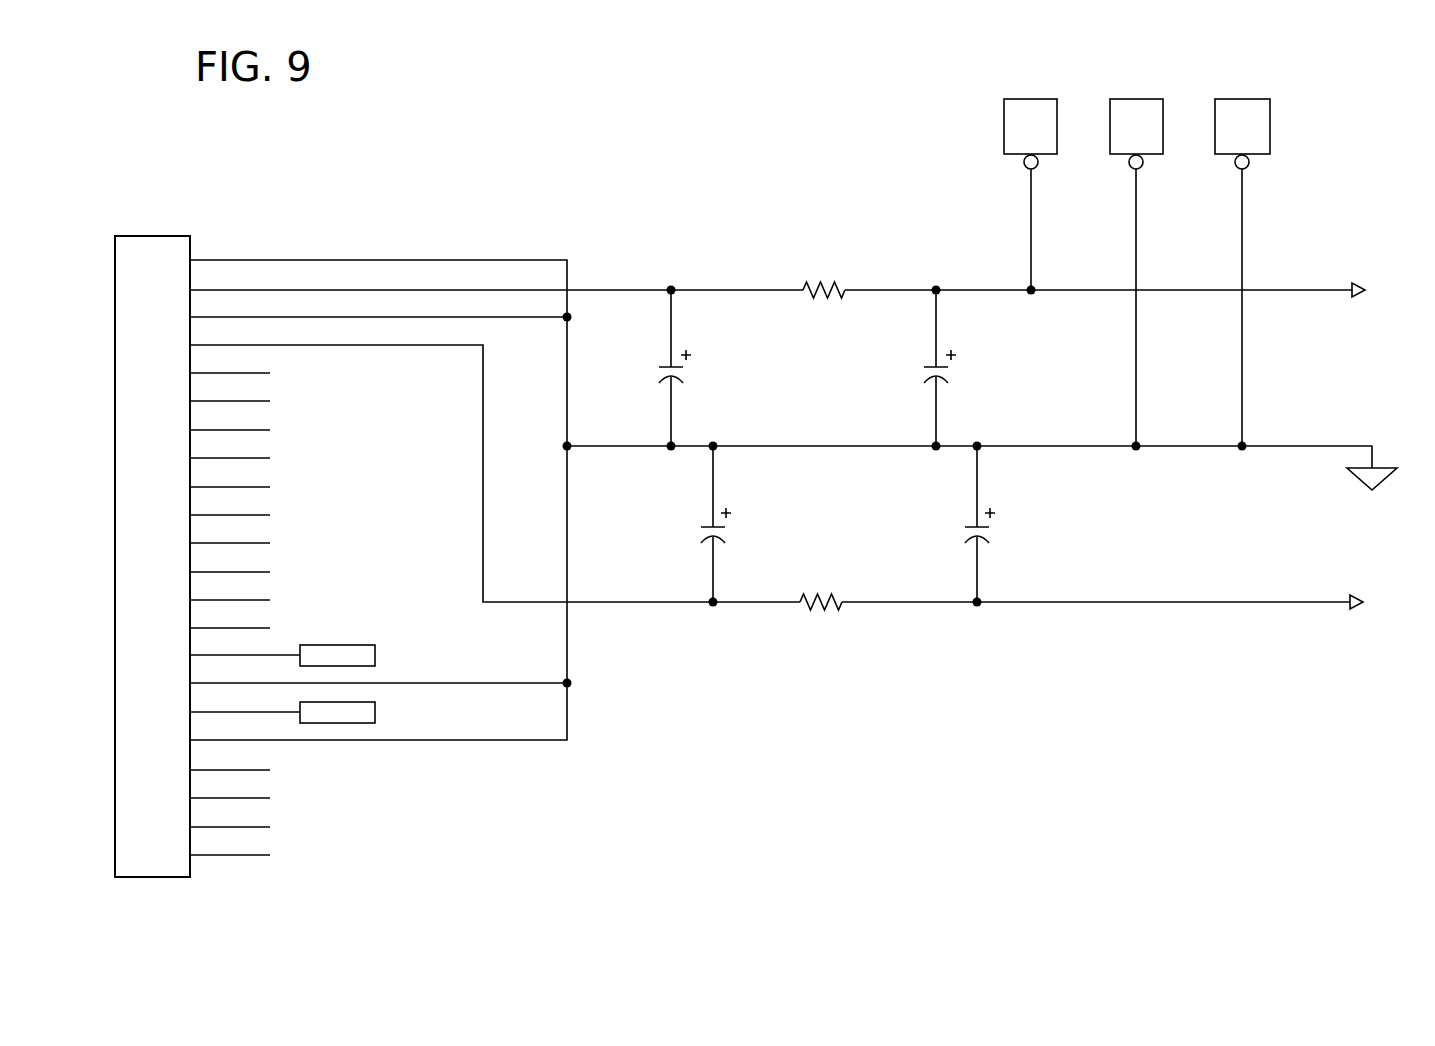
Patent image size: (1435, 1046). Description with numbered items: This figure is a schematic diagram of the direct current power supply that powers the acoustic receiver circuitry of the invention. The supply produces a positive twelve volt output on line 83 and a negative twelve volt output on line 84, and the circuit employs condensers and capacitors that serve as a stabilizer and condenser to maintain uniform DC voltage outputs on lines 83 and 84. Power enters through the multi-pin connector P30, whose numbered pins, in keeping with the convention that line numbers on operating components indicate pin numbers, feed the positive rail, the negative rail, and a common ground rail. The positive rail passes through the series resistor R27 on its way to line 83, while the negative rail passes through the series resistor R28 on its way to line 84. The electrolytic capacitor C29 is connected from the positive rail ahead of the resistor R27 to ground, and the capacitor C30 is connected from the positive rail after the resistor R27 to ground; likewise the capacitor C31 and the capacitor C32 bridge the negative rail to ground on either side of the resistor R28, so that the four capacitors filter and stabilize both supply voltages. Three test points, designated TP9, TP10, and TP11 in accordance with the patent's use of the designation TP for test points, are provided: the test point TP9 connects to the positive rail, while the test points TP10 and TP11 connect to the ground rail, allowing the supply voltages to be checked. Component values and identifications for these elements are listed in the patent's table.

The line 83 is at (1283, 292).
The line 84 is at (1297, 603).
The connector P30 is at (457, 541).
The resistor R27 is at (824, 276).
The resistor R28 is at (821, 588).
The capacitor C29 is at (699, 368).
The capacitor C30 is at (964, 368).
The capacitor C31 is at (739, 524).
The capacitor C32 is at (1003, 524).
The test point TP9 is at (1040, 181).
The test point TP10 is at (1136, 259).
The test point TP11 is at (1252, 259).